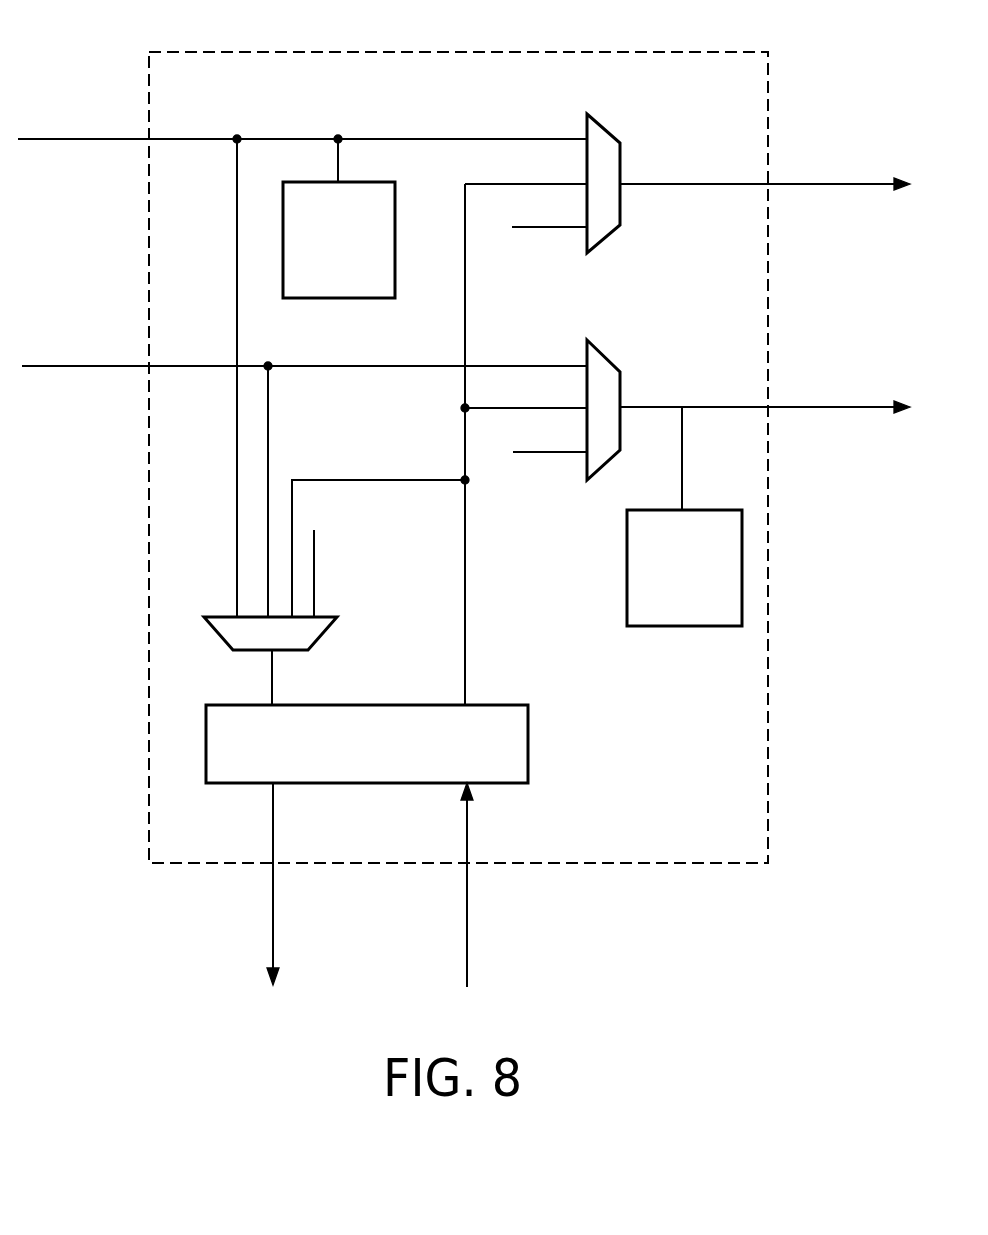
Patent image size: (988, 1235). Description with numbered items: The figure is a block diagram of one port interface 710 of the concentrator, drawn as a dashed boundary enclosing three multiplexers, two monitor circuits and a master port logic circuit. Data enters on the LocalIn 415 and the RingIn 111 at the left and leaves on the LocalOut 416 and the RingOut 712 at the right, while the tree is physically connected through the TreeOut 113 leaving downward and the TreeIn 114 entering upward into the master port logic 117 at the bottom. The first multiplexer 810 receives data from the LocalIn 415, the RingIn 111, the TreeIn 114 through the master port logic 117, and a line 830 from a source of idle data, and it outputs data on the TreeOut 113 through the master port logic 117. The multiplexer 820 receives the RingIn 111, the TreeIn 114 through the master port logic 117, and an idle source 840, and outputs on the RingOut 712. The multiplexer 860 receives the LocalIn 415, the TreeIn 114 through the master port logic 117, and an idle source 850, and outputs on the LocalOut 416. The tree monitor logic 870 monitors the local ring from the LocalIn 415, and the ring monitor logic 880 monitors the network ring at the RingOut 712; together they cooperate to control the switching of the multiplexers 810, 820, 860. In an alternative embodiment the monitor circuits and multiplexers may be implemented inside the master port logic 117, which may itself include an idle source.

The port interface 710 is at (395, 52).
The LocalIn 415 is at (135, 141).
The LocalOut 416 is at (772, 185).
The RingIn 111 is at (138, 367).
The RINGOUT output 712 is at (782, 408).
The multiplexer 860 is at (596, 125).
The idle source 850 is at (580, 228).
The multiplexer 820 is at (596, 350).
The idle source 840 is at (580, 453).
The multiplexer 810 is at (325, 632).
The line from a source for idle data 830 is at (316, 560).
The tree monitor logic 870 is at (338, 298).
The ring monitor logic 880 is at (675, 626).
The master port logic circuit 117 is at (505, 704).
The TreeOut 113 is at (273, 925).
The TreeIn 114 is at (467, 920).